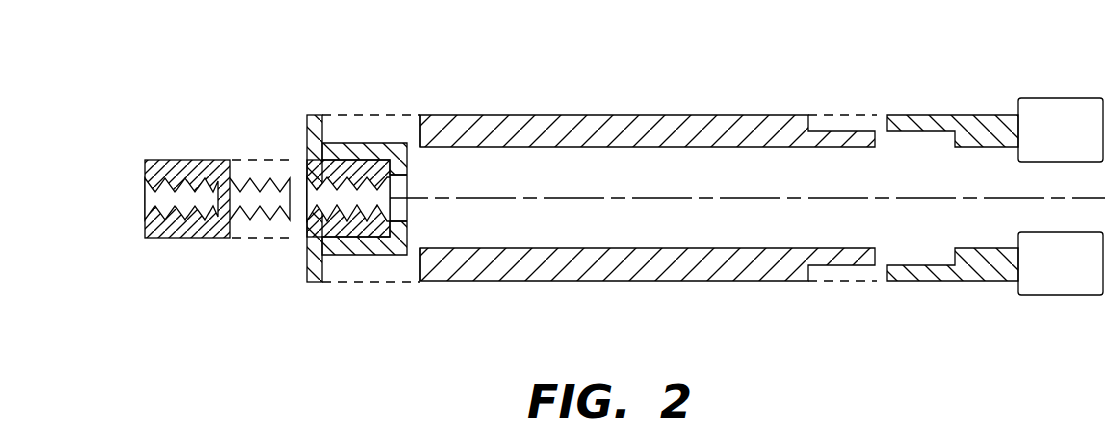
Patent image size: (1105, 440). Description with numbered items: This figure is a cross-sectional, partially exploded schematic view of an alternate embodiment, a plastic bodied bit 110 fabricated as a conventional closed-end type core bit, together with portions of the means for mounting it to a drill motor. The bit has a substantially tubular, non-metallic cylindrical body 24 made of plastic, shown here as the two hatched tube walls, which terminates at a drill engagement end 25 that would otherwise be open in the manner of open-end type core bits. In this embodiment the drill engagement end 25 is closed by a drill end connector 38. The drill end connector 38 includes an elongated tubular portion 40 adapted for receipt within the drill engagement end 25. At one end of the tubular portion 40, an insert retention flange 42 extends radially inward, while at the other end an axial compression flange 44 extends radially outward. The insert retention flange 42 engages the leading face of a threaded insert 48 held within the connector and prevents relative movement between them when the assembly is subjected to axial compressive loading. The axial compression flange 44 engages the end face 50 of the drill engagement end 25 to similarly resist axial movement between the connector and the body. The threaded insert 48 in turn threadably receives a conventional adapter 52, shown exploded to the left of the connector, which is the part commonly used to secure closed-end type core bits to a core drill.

The cylindrical body 24 is at (608, 115).
The drill engagement end 25 is at (436, 180).
The drill end connector 38 is at (324, 138).
The elongated tubular portion 40 is at (368, 255).
The insert retention flange 42 is at (408, 237).
The axial compression flange 44 is at (323, 268).
The threaded insert 48 is at (305, 167).
The end face 50 is at (416, 119).
The adapter 52 is at (185, 238).
The plastic bodied bit 110 is at (685, 93).